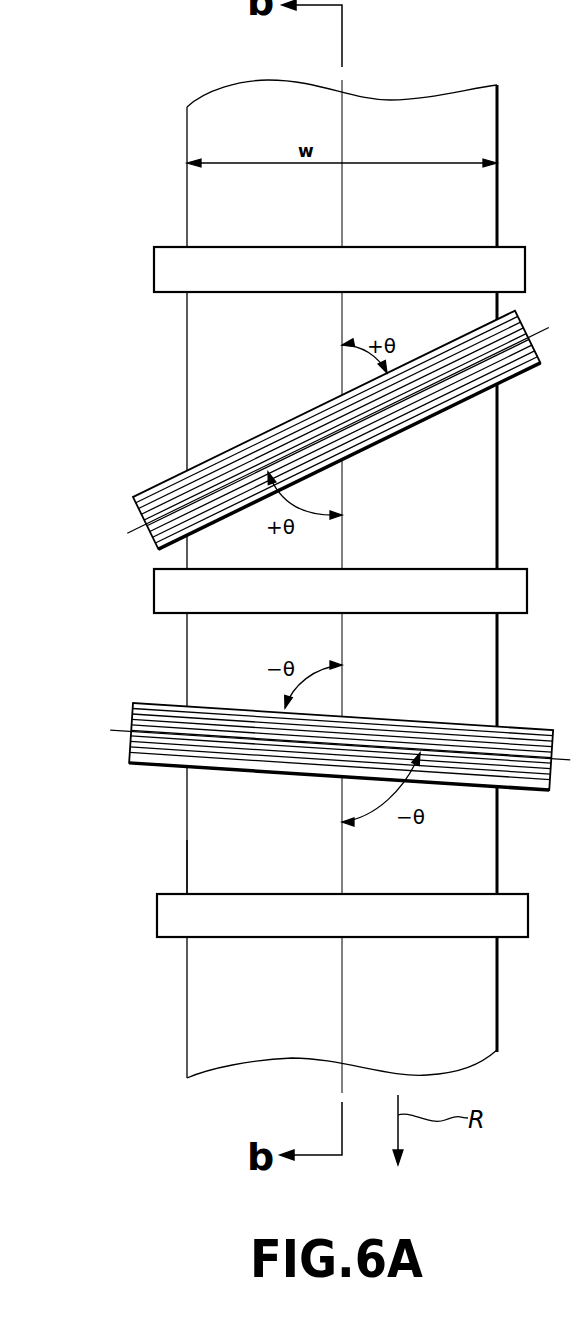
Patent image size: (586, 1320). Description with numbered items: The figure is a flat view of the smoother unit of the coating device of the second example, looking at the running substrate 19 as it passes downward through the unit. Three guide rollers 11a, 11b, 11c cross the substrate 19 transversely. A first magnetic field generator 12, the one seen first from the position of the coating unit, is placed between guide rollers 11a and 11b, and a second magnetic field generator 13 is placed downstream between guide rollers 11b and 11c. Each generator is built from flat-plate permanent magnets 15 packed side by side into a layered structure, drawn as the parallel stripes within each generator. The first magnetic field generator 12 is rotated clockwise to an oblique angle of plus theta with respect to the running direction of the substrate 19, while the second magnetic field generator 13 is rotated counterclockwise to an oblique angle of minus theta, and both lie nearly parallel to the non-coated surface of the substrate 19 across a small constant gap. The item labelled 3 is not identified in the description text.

The tape substrate 3 is at (197, 677).
The guide roller 11a is at (172, 280).
The guide roller 11b is at (163, 613).
The guide roller 11c is at (175, 930).
The first magnetic field generator 12 is at (166, 468).
The second magnetic field generator 13 is at (163, 775).
The permanent magnets 15 is at (128, 535).
The substrate 19 is at (197, 857).